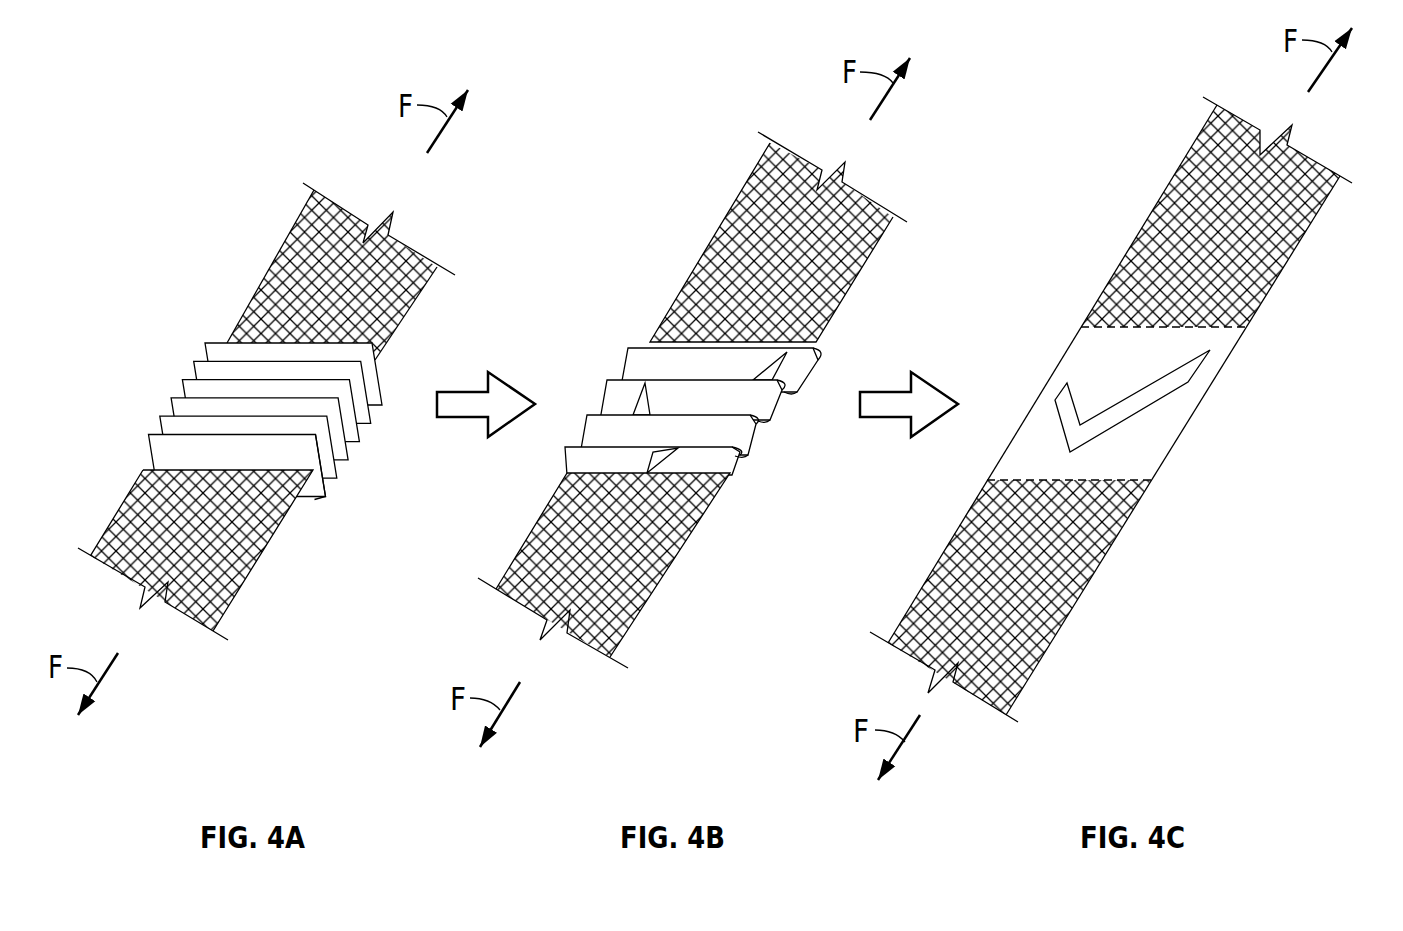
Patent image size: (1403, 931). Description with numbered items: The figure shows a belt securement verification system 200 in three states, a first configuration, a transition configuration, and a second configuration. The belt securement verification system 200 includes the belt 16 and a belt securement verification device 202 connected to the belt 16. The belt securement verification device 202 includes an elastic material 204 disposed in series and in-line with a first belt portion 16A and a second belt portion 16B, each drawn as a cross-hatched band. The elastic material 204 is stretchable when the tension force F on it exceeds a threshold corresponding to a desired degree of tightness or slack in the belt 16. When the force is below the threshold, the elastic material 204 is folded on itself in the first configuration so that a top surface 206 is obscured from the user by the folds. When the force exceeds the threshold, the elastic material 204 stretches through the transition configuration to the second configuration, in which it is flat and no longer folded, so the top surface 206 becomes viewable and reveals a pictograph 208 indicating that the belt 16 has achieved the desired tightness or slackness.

In FIG. 4A, the belt 16 is at (298, 238).
In FIG. 4B, the belt 16 is at (727, 225).
In FIG. 4C, the belt 16 is at (1180, 173).
In FIG. 4A, the first belt portion 16A is at (417, 293).
In FIG. 4B, the first belt portion 16A is at (847, 285).
In FIG. 4C, the first belt portion 16A is at (1287, 250).
In FIG. 4A, the second belt portion 16B is at (223, 600).
In FIG. 4B, the second belt portion 16B is at (665, 575).
In FIG. 4C, the second belt portion 16B is at (1083, 583).
In FIG. 4A, the belt securement verification system 200 is at (298, 407).
In FIG. 4B, the belt securement verification system 200 is at (719, 400).
In FIG. 4C, the belt securement verification system 200 is at (1136, 409).
In FIG. 4A, the belt securement verification device 202 is at (160, 380).
In FIG. 4B, the belt securement verification device 202 is at (612, 372).
In FIG. 4C, the belt securement verification device 202 is at (1062, 335).
In FIG. 4A, the elastic material 204 is at (305, 492).
In FIG. 4B, the elastic material 204 is at (762, 422).
In FIG. 4C, the elastic material 204 is at (1170, 452).
In FIG. 4A, the top surface 206 is at (160, 448).
In FIG. 4C, the pictograph 208 is at (1177, 390).